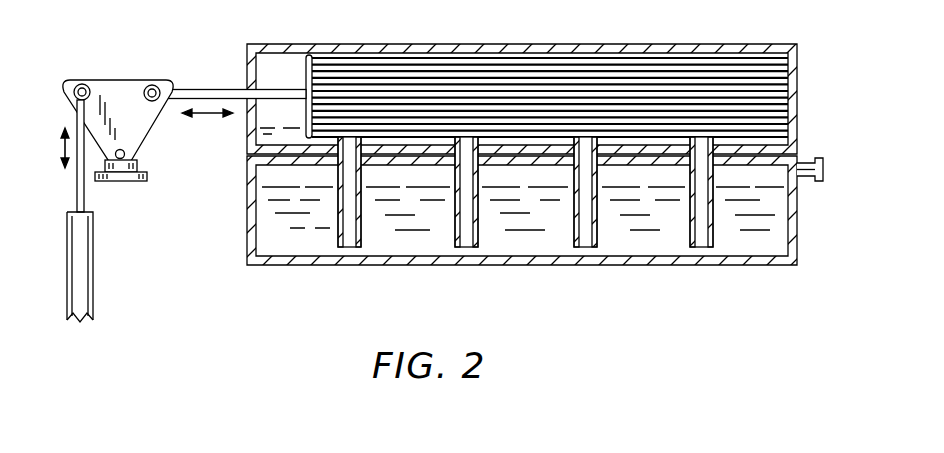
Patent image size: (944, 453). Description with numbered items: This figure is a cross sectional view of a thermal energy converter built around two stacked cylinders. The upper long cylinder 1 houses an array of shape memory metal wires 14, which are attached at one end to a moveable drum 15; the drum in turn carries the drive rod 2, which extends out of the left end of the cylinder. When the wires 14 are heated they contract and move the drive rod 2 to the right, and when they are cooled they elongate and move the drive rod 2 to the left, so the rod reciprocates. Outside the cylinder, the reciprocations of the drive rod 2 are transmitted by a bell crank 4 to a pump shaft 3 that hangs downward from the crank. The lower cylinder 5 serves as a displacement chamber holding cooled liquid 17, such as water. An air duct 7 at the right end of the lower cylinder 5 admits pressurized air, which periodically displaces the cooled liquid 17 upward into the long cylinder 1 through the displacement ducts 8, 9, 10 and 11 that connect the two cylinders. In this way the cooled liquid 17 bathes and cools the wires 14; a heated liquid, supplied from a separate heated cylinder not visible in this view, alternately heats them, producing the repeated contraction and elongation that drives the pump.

The long cylinder 1 is at (368, 44).
The drive rod 2 is at (199, 89).
The pump shaft 3 is at (86, 197).
The bell crank 4 is at (125, 80).
The cylinder 5 is at (250, 223).
The air connector 7 is at (806, 181).
The displacement duct 8 is at (360, 265).
The displacement duct 9 is at (477, 265).
The displacement duct 10 is at (603, 265).
The displacement duct 11 is at (721, 265).
The shape memory metal wires 14 is at (511, 58).
The moveable drum 15 is at (306, 75).
The cooled liquid 17 is at (262, 180).